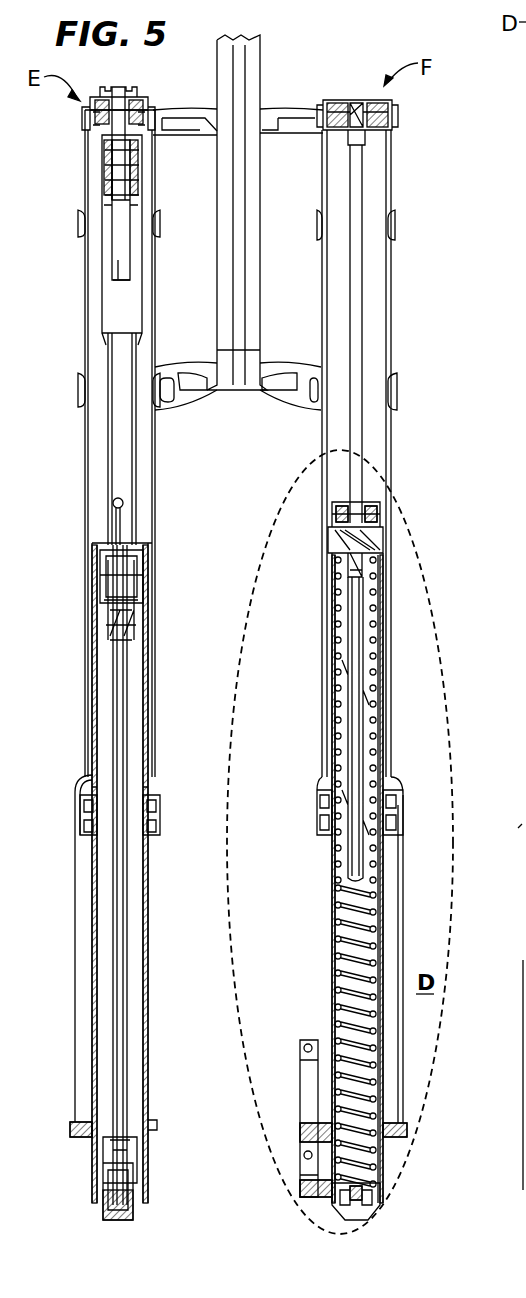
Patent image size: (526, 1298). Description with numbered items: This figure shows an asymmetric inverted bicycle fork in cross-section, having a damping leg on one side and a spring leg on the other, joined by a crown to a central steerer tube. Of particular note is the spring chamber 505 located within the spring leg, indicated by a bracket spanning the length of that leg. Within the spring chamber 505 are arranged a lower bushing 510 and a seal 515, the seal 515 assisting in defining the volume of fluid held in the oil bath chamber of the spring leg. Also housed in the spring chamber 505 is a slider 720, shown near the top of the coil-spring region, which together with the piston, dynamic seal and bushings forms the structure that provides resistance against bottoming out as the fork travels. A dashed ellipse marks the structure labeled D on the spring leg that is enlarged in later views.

The spring chamber 505 is at (396, 1218).
The slider 720 is at (382, 528).
The lower bushing 510 is at (385, 763).
The seal 515 is at (392, 808).